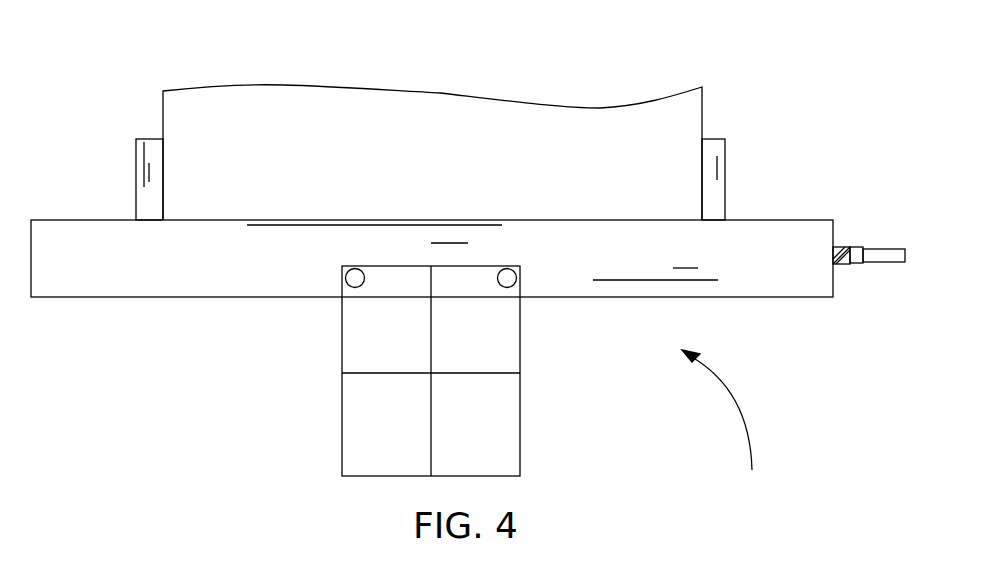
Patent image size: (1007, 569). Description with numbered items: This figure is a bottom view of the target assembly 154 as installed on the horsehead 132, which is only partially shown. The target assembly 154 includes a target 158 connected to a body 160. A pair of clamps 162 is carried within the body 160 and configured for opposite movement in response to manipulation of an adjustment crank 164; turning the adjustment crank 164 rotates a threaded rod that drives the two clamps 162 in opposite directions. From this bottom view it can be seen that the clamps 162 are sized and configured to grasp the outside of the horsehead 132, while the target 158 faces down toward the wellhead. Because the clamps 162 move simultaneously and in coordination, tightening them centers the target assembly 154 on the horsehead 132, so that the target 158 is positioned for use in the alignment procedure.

The horsehead 132 is at (322, 100).
The target assembly 154 is at (728, 423).
The target 158 is at (502, 419).
The body 160 is at (745, 267).
The clamps 162 is at (144, 140).
The adjustment crank 164 is at (853, 267).